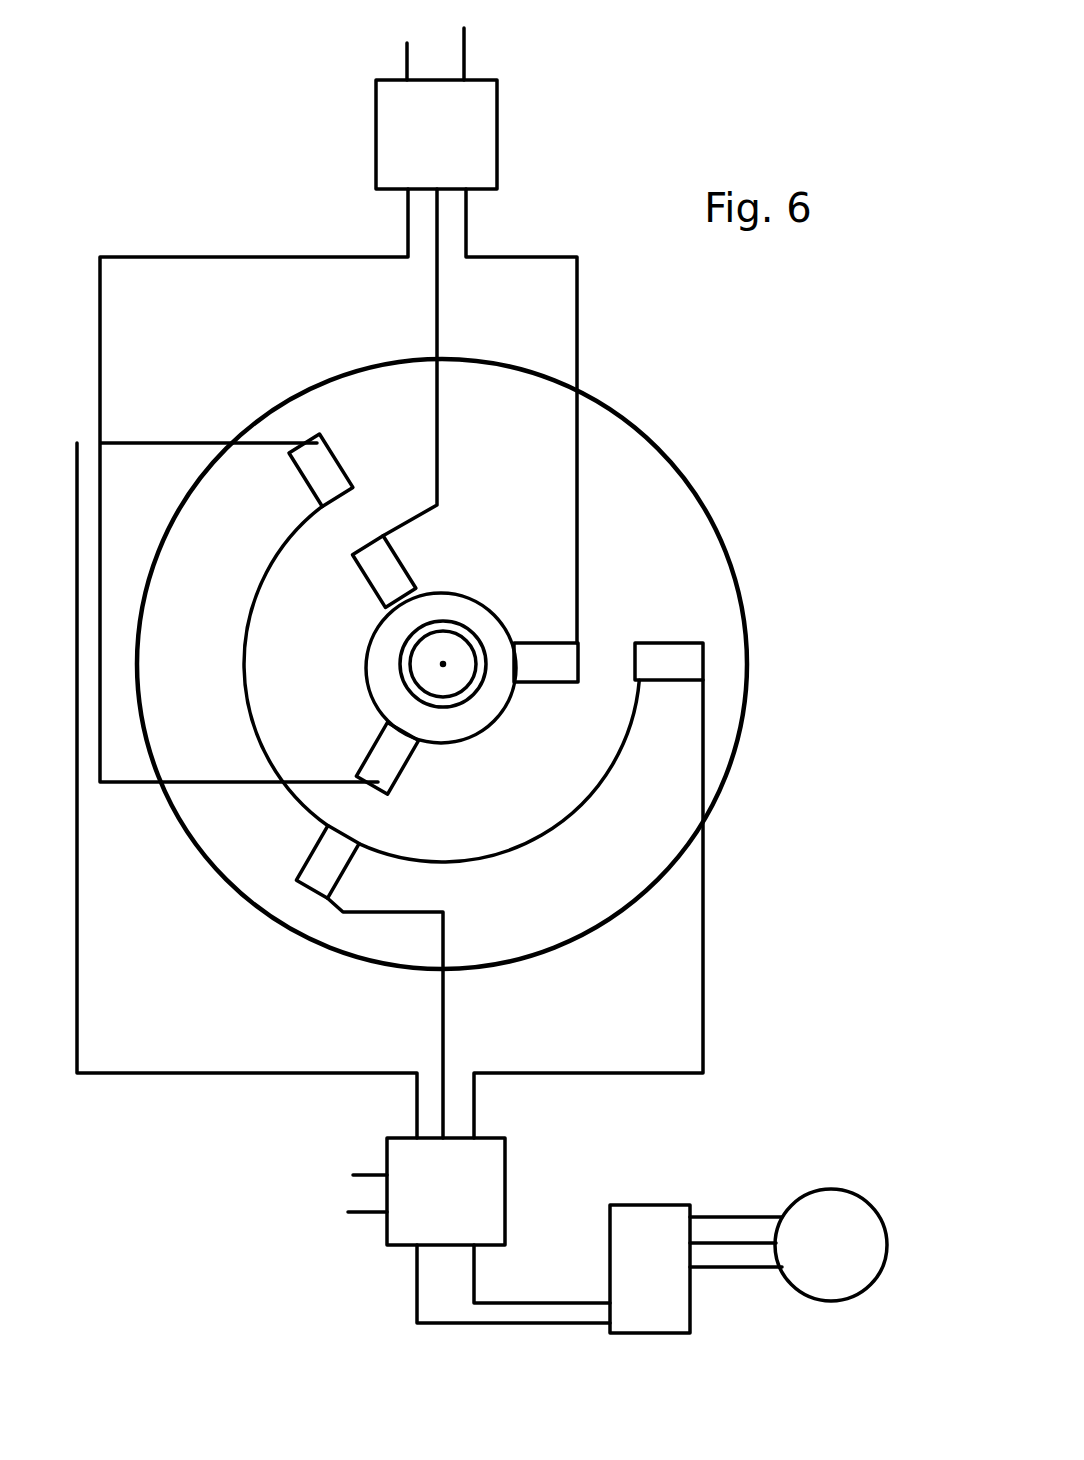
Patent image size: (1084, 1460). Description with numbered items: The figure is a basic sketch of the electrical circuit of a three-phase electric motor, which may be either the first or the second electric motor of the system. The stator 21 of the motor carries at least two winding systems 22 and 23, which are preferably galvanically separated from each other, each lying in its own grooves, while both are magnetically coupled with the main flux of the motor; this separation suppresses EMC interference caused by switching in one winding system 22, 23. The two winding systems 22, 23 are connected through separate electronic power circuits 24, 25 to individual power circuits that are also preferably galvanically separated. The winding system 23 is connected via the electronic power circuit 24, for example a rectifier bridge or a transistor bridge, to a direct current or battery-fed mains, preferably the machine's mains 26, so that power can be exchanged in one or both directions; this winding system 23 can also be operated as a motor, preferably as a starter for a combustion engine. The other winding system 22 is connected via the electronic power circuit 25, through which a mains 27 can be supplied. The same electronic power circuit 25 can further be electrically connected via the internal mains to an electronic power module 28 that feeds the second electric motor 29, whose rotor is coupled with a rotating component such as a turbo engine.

The stator 21 is at (667, 575).
The winding system 22 is at (311, 467).
The winding system 23 is at (543, 662).
The electronic power circuit 24 is at (457, 156).
The electronic power circuit 25 is at (475, 1170).
The machine's mains 26 is at (432, 45).
The mains 27 is at (328, 1196).
The electronic power module 28 is at (635, 1238).
The second electric motor 29 is at (823, 1220).